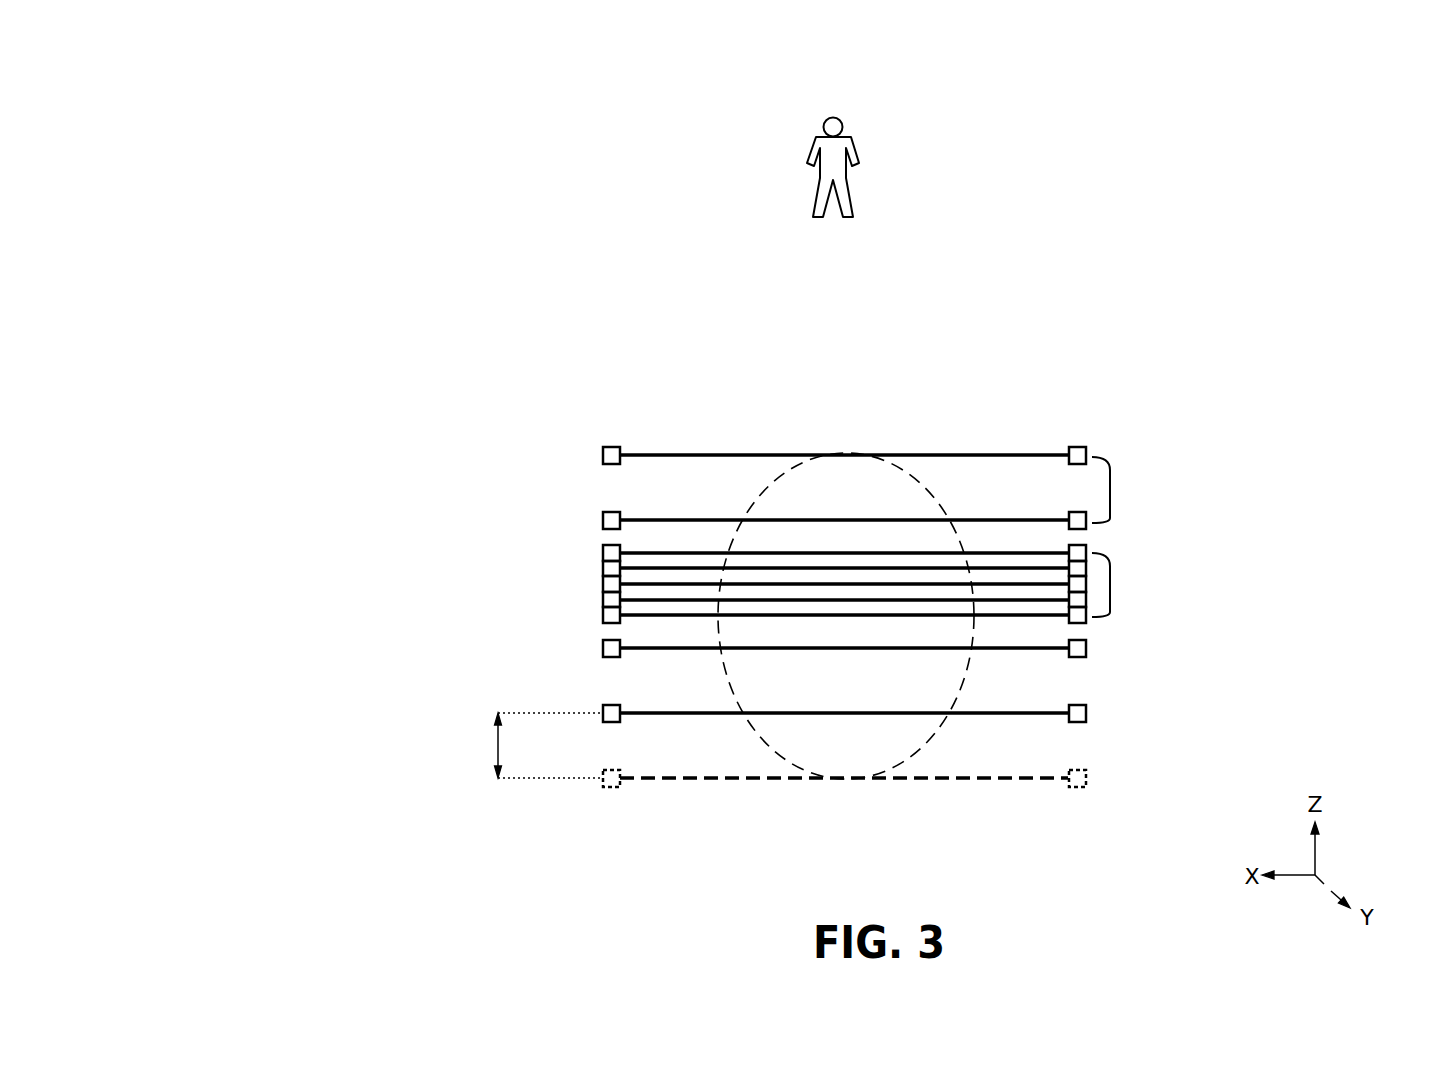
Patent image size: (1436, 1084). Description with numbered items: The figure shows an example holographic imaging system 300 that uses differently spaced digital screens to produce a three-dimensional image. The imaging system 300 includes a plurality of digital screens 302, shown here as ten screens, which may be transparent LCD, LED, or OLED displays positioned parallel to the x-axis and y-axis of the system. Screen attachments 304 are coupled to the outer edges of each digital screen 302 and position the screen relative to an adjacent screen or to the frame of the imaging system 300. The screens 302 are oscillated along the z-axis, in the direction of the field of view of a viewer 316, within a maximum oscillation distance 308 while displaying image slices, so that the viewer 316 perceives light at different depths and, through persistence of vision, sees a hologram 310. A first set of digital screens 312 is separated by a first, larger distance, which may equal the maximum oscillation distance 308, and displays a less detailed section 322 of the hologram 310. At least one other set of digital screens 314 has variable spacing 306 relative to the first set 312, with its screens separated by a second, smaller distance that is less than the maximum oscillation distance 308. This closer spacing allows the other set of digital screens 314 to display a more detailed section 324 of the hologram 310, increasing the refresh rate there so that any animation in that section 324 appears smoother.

The holographic imaging system 300 is at (135, 107).
The digital screen 302 is at (707, 444).
The screen attachment 304 is at (588, 437).
The variable spacing 306 is at (588, 541).
The maximum oscillation distance 308 is at (474, 717).
The hologram 310 is at (978, 698).
The first set of digital screens 312 is at (1110, 490).
The other set of digital screens 314 is at (1110, 585).
The viewer 316 is at (851, 187).
The less detailed section of hologram 322 is at (917, 492).
The more detailed section of hologram 324 is at (950, 599).